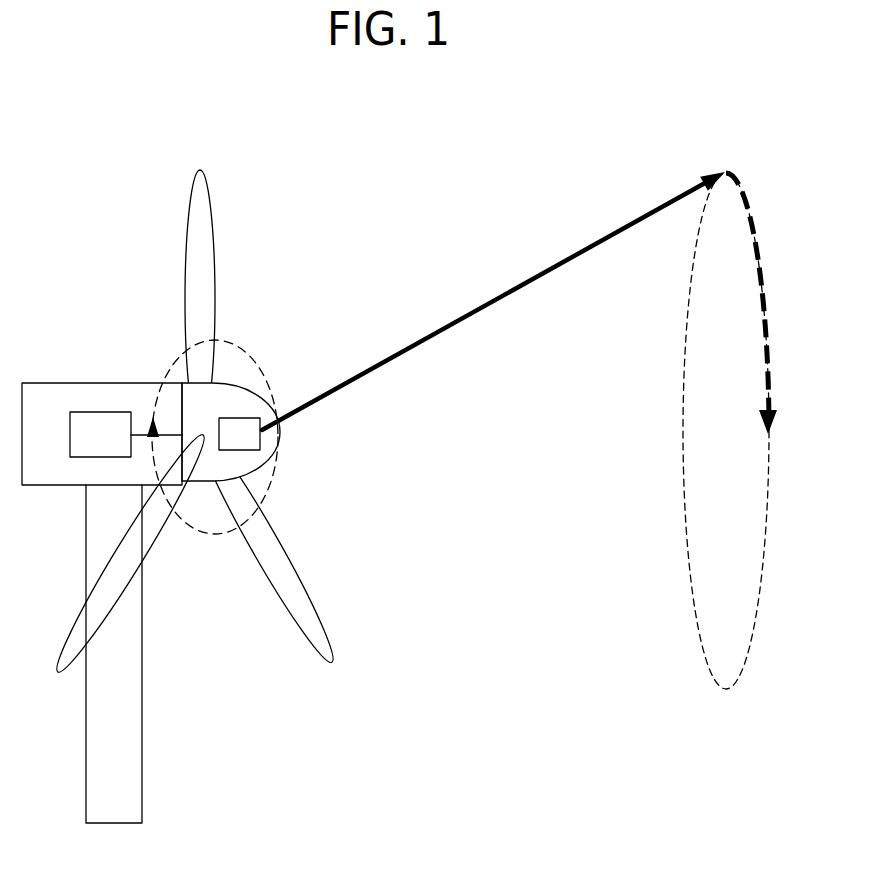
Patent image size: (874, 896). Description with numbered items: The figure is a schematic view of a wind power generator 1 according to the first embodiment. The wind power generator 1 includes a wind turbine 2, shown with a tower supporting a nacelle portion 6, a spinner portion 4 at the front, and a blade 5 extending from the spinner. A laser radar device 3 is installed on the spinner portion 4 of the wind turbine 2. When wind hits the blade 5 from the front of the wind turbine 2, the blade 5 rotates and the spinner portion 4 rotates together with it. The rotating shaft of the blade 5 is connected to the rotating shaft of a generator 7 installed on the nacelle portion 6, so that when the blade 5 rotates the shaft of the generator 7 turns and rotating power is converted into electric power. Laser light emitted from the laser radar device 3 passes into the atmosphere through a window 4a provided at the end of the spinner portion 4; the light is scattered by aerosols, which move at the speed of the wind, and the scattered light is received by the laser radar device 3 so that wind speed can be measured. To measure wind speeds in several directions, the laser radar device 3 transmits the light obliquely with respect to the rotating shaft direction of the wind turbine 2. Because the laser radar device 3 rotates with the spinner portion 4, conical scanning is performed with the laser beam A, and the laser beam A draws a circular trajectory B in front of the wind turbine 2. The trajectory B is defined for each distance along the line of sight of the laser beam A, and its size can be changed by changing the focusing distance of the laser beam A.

The wind power generator 1 is at (288, 270).
The wind turbine 2 is at (151, 352).
The laser radar device 3 is at (238, 417).
The spinner portion 4 is at (195, 481).
The window 4a is at (277, 447).
The blade 5 is at (204, 240).
The nacelle portion 6 is at (57, 390).
The generator 7 is at (78, 462).
The laser beam A is at (490, 300).
The circular trajectory B is at (772, 565).